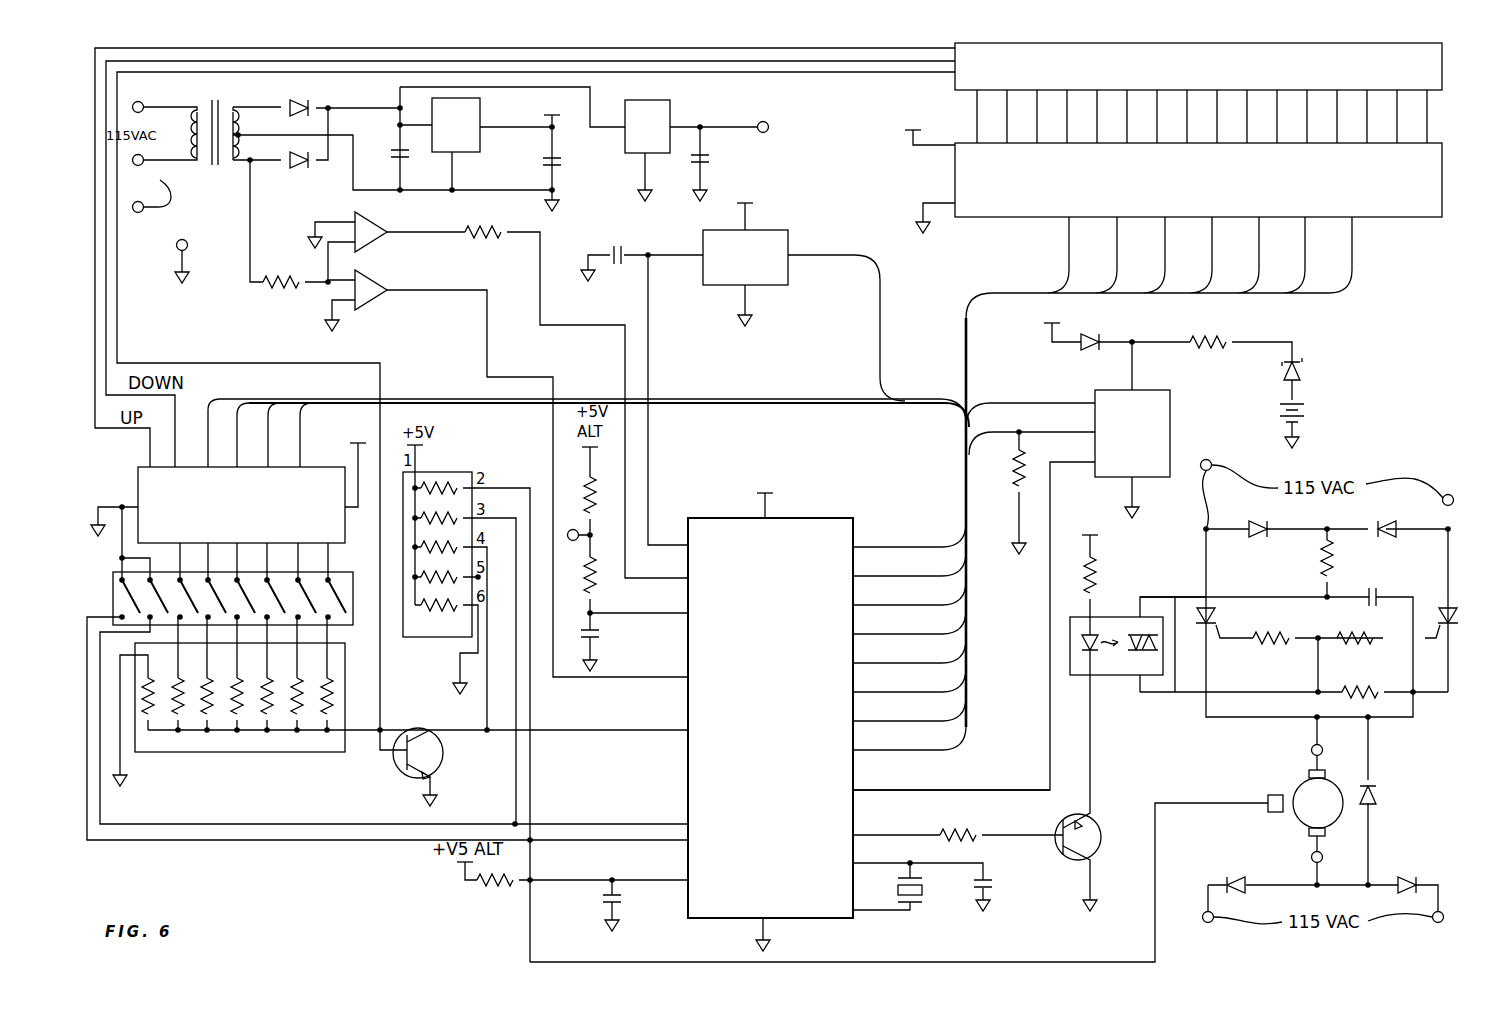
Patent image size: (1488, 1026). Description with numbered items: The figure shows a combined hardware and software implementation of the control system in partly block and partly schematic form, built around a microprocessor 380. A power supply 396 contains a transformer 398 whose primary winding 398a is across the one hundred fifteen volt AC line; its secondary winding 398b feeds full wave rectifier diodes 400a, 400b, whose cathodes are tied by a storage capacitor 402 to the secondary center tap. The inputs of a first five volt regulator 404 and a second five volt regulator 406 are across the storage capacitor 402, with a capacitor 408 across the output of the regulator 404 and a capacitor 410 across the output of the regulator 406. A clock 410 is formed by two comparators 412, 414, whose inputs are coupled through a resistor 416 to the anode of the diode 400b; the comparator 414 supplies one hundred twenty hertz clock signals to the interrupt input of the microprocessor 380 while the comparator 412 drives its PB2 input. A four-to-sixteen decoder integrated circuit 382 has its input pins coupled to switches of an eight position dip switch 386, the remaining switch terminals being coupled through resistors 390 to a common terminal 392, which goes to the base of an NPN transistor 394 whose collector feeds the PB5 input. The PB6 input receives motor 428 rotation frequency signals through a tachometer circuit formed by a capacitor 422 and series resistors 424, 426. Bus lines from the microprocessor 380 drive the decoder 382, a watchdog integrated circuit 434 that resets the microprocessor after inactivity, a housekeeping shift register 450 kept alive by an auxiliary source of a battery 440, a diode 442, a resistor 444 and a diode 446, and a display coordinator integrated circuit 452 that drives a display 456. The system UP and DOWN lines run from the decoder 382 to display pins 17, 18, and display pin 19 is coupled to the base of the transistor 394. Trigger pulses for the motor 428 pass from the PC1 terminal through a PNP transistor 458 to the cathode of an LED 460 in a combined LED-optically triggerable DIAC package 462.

The display pin 17 is at (525, 251).
The display pin 18 is at (953, 63).
The display pin 19 is at (536, 411).
The microprocessor 380 is at (852, 495).
The 4-to-16 decoder integrated circuit 382 is at (112, 476).
The eight position dip switch 386 is at (101, 598).
The 10K resistors 390 is at (313, 769).
The common terminal 392 is at (227, 733).
The NPN transistor 394 is at (440, 760).
The power supply 396 is at (227, 290).
The transformer 398 is at (186, 146).
The primary winding 398a is at (188, 118).
The secondary winding 398b is at (240, 120).
The full wave rectifier diode 400a is at (305, 103).
The full wave rectifier diode 400b is at (290, 166).
The storage capacitor 402 is at (395, 150).
The +5 VDC regulator 404 is at (480, 148).
The +5 VDC regulator 406 is at (670, 115).
The capacitor 408 is at (560, 166).
The capacitor / clock 410 is at (702, 152).
The comparator 412 is at (377, 303).
The comparator 414 is at (377, 243).
The 82K resistor 416 is at (288, 288).
The capacitor 422 is at (618, 912).
The 2.2K resistor 424 is at (565, 877).
The 2.2K resistor 426 is at (497, 885).
The motor 428 is at (1298, 784).
The watchdog integrated circuit 434 is at (695, 300).
The +3.4 VDC battery 440 is at (1285, 418).
The diode 442 is at (1300, 367).
The 10K resistor 444 is at (1213, 336).
The diode 446 is at (1097, 337).
The housekeeping integrated circuit shift register 450 is at (1187, 427).
The display coordinator integrated circuit 452 is at (965, 250).
The display 456 is at (1452, 102).
The PNP transistor 458 is at (1088, 818).
The LED 460 is at (1093, 655).
The combined LED-optically triggerable DIAC package 462 is at (1108, 614).